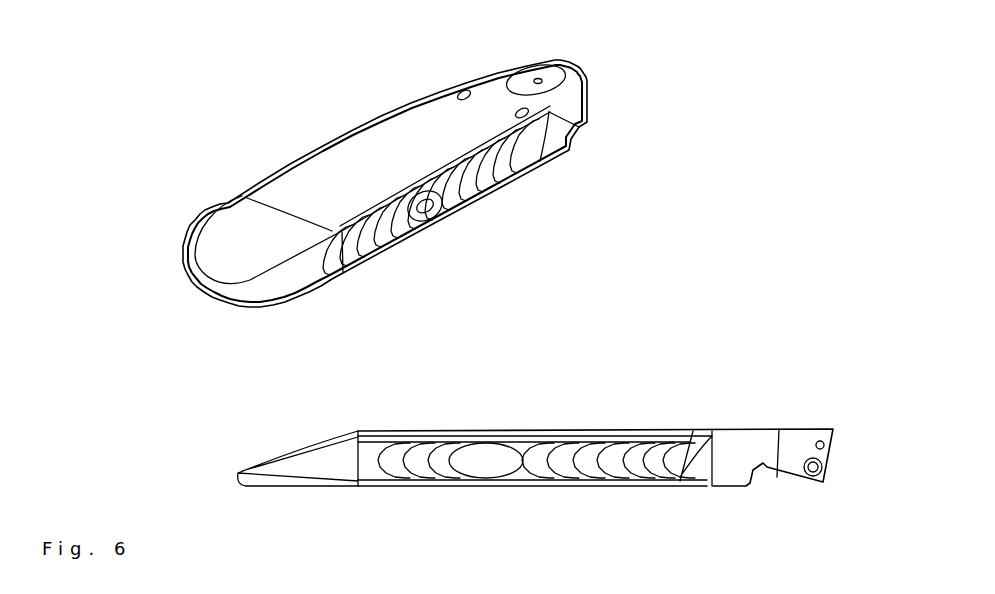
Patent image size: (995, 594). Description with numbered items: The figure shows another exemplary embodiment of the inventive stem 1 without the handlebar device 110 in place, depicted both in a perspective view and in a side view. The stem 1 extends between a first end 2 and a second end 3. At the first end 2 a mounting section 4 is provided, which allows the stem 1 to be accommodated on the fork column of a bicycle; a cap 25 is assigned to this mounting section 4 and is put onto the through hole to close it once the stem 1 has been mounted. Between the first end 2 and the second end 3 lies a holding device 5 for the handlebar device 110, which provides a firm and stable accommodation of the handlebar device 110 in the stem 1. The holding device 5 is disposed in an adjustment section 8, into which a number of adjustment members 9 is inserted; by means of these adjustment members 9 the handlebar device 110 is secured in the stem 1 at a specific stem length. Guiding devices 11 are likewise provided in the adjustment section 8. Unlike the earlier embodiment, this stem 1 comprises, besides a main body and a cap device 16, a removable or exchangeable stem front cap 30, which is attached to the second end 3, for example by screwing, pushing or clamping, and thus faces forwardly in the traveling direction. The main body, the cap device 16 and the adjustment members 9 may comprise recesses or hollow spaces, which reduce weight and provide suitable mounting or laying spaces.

The stem 1 is at (121, 85).
The first end 2 is at (814, 394).
The second end 3 is at (348, 292).
The mounting section 4 is at (584, 148).
The holding device 5 is at (398, 104).
The adjustment section 8 is at (314, 146).
The adjustment members 9 is at (493, 190).
The guiding devices 11 is at (420, 227).
The cap device 16 is at (397, 137).
The cap 25 is at (517, 80).
The stem front cap 30 is at (218, 233).
The handlebar device 110 is at (479, 462).